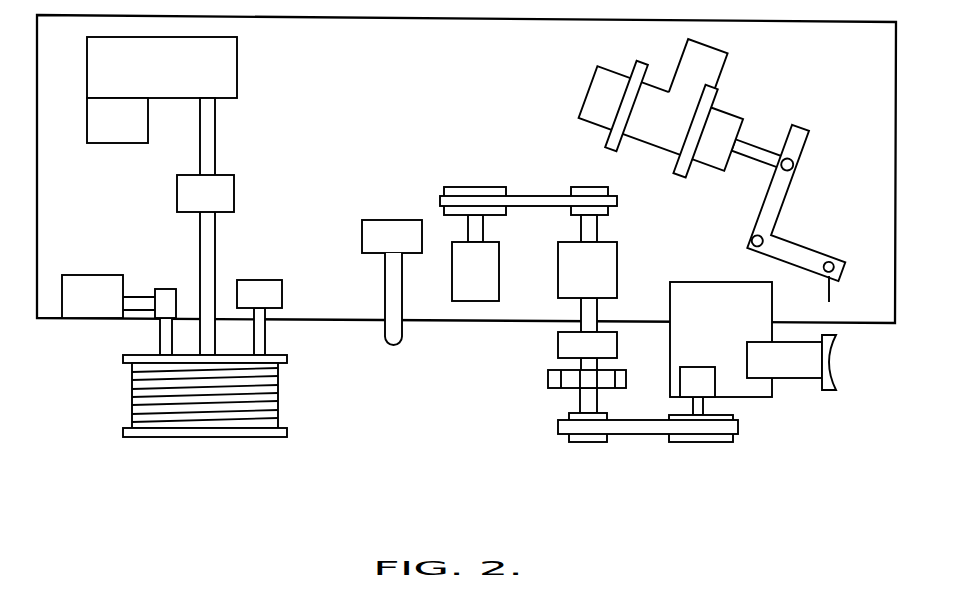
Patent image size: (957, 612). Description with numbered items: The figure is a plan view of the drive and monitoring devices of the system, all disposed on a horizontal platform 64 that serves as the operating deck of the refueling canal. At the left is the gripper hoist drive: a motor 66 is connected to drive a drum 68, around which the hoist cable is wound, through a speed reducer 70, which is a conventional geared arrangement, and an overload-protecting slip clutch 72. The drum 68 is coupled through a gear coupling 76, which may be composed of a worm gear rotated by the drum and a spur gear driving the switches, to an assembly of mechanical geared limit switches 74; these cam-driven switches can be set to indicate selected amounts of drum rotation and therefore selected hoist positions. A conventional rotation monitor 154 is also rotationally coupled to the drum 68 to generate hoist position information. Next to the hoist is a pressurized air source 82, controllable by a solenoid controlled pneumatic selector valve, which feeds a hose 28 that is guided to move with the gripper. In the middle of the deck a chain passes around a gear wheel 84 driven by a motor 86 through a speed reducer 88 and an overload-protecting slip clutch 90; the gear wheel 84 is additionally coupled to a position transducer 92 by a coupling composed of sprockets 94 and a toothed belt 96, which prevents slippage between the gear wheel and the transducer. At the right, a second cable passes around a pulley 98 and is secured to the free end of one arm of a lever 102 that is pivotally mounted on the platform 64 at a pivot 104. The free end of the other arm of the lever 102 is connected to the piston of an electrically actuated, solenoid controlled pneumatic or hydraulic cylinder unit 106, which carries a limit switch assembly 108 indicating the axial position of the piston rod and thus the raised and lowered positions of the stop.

The platform 64 is at (887, 285).
The motor 66 is at (118, 132).
The drum 68 is at (132, 395).
The speed reducer 70 is at (170, 77).
The slip clutch 72 is at (210, 193).
The mechanical geared limit switches 74 is at (80, 285).
The gear coupling 76 is at (165, 296).
The rotation monitor 154 is at (260, 295).
The pressurized air source 82 is at (392, 230).
The hose 28 is at (388, 347).
The motor 86 is at (472, 282).
The speed reducer 88 is at (598, 275).
The slip clutch 90 is at (597, 354).
The gear wheel 84 is at (552, 383).
The sprockets 94 is at (575, 413).
The toothed belt 96 is at (627, 428).
The position transducer 92 is at (717, 398).
The pulley 98 is at (837, 356).
The lever 102 is at (800, 241).
The pivot 104 is at (752, 237).
The cylinder unit 106 is at (672, 129).
The limit switch assembly 108 is at (705, 74).